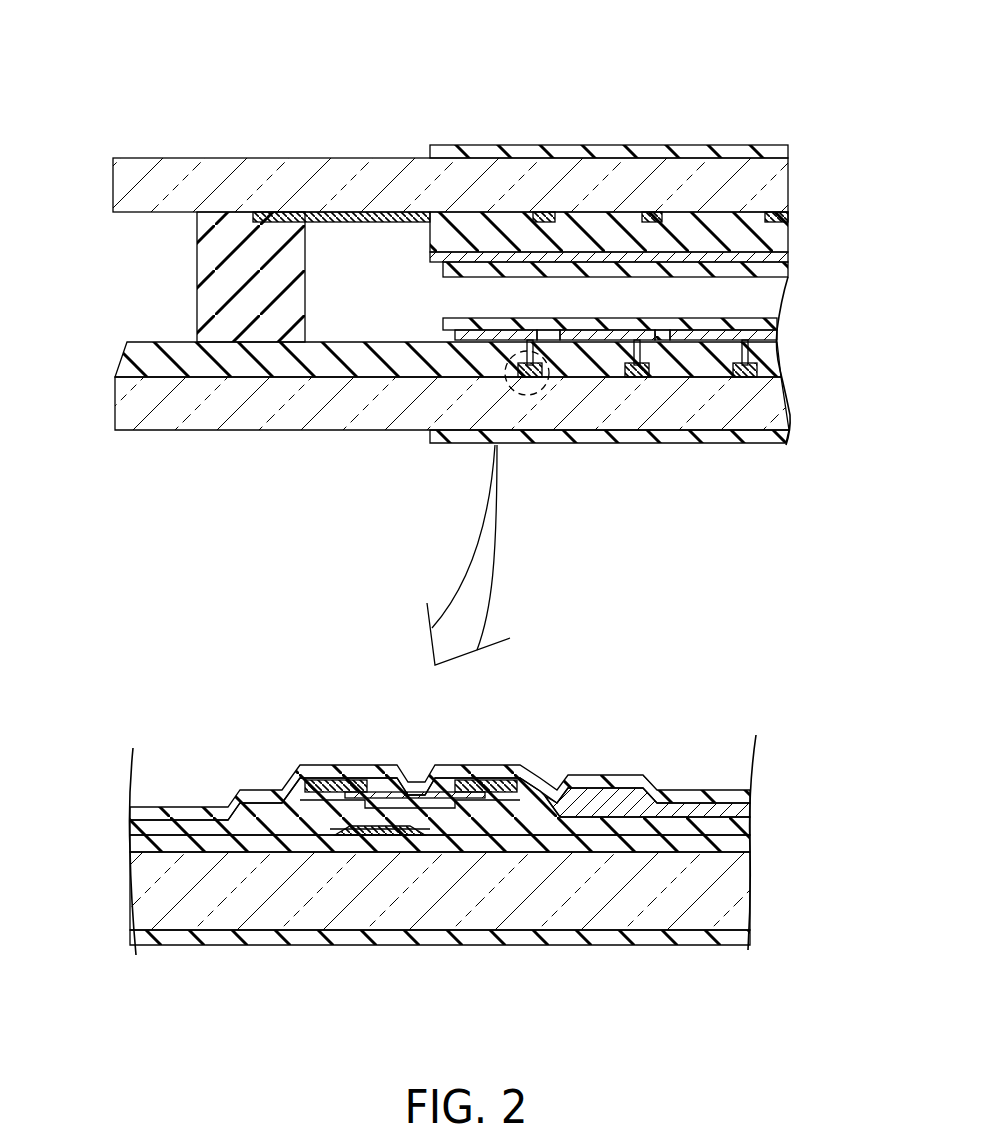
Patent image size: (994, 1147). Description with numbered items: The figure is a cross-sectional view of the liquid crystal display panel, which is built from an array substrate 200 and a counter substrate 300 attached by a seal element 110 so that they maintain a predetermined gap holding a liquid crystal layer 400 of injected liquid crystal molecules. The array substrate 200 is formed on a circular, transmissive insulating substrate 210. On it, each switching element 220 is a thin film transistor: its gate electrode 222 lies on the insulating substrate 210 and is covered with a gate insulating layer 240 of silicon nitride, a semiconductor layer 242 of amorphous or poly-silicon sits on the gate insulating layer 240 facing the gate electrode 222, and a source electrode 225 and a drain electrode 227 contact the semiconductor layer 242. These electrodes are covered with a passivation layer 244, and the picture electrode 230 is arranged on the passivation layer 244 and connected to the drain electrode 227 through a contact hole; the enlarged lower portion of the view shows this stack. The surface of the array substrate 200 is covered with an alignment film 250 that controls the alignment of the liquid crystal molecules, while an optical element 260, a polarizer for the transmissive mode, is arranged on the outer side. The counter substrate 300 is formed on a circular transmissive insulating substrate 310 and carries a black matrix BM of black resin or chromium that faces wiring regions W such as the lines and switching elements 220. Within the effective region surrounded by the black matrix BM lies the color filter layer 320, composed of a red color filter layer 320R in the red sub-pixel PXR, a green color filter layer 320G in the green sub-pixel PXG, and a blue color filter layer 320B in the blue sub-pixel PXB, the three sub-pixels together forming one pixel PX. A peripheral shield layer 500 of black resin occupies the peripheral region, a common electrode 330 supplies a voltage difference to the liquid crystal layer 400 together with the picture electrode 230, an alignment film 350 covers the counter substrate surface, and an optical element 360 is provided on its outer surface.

The seal element 110 is at (197, 306).
The array substrate 200 is at (467, 612).
The insulating substrate 210 is at (130, 413).
The switching element 220 is at (357, 860).
The gate electrode 222 is at (396, 853).
The source electrode 225 is at (340, 790).
The drain electrode 227 is at (494, 768).
The picture electrode 230 is at (465, 342).
The gate insulating layer 240 is at (755, 845).
The semiconductor layer 242 is at (406, 790).
The passivation layer 244 is at (780, 345).
The alignment film 250 is at (790, 323).
The optical element 260 is at (790, 436).
The counter substrate 300 is at (467, 193).
The insulating substrate 310 is at (130, 190).
The color filter layer 320 is at (795, 226).
The red color filter layer 320R is at (490, 232).
The green color filter layer 320G is at (600, 232).
The blue color filter layer 320B is at (706, 232).
The common electrode 330 is at (795, 256).
The alignment film 350 is at (795, 270).
The optical element 360 is at (795, 150).
The liquid crystal layer 400 is at (760, 299).
The peripheral shield layer 500 is at (358, 212).
The black matrix BM is at (542, 212).
The pixel PX is at (467, 74).
The red sub-pixel PXR is at (545, 131).
The green sub-pixel PXG is at (662, 131).
The blue sub-pixel PXB is at (778, 131).
The wiring region W is at (525, 380).